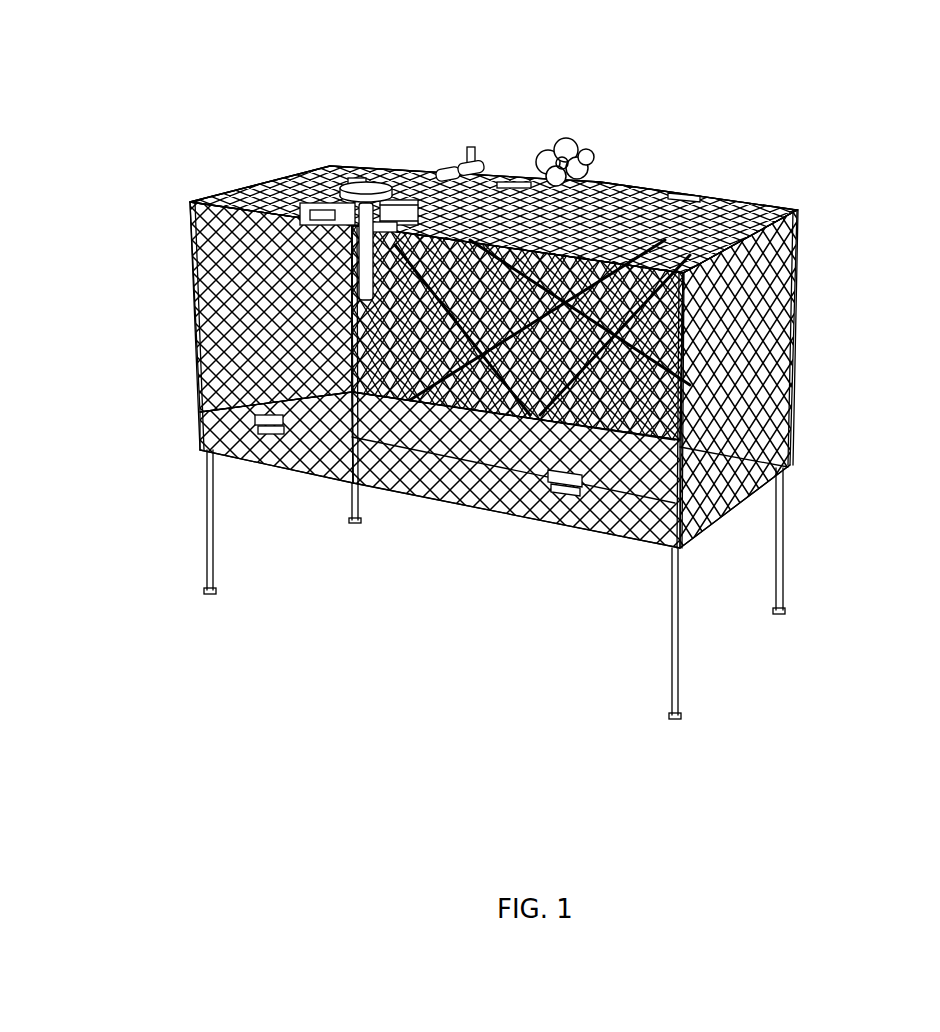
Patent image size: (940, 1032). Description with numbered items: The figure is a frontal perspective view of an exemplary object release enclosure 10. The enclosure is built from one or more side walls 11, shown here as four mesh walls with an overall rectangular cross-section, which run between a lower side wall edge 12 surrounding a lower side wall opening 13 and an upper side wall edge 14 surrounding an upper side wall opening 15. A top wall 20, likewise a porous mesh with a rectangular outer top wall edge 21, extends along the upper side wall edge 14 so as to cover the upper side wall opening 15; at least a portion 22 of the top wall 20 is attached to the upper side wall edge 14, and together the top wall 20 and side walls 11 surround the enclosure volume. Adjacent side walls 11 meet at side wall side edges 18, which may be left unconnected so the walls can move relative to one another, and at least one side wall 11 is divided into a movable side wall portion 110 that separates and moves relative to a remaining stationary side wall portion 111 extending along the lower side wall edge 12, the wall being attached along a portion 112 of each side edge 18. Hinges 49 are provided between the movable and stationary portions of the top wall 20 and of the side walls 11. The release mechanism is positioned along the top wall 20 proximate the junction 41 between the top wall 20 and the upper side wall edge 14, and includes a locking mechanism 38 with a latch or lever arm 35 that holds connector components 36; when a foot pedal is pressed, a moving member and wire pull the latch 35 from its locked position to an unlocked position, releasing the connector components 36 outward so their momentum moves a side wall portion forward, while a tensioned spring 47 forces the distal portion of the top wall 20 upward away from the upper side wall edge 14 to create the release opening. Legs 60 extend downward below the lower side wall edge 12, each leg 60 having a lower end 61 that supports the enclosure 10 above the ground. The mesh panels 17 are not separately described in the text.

The object release enclosure 10 is at (887, 106).
The side walls 11 is at (290, 315).
The lower side wall edge 12 is at (435, 515).
The lower side wall opening 13 is at (300, 508).
The upper side wall edge 14 is at (223, 207).
The upper side wall opening 15 is at (283, 192).
The mesh side panel 17 is at (255, 355).
The side wall side edges 18 is at (850, 388).
The top wall 20 is at (257, 193).
The outer top wall edge 21 is at (203, 197).
The top wall attached portion 22 is at (595, 185).
The latch 35 is at (227, 196).
The connector components 36 is at (360, 183).
The locking mechanism 38 is at (320, 193).
The junction 41 is at (270, 210).
The spring 47 is at (568, 140).
The hinges 49 is at (267, 425).
The legs 60 is at (210, 560).
The lower end 61 is at (213, 595).
The movable side wall portion 110 is at (237, 393).
The stationary side wall portion 111 is at (520, 520).
The side wall side edge portion 112 is at (235, 425).